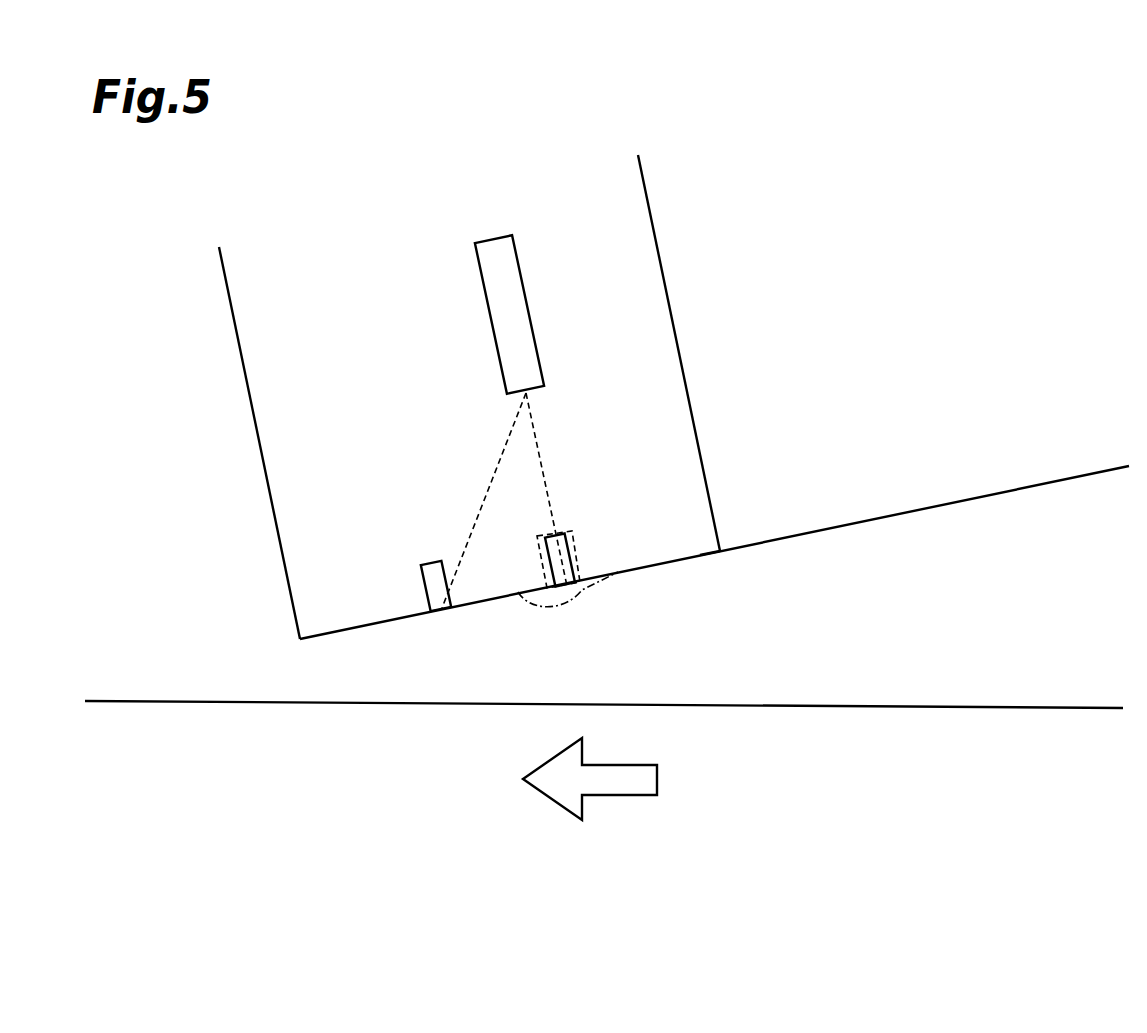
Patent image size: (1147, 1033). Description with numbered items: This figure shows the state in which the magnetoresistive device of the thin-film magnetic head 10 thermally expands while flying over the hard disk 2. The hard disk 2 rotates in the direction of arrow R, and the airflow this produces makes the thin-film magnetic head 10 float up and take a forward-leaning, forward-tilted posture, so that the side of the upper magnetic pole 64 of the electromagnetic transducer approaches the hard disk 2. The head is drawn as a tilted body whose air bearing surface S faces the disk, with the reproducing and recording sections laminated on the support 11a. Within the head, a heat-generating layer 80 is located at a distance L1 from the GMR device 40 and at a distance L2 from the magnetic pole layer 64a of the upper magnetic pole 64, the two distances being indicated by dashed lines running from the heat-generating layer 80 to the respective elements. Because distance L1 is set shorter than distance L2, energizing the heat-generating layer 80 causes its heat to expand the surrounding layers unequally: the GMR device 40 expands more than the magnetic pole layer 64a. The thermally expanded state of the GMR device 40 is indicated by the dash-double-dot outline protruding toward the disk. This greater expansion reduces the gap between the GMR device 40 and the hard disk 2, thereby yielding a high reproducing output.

The thin-film magnetic head 10 is at (241, 462).
The support 11a is at (909, 514).
The air bearing surface S is at (703, 556).
The hard disk 2 is at (898, 707).
The heat-generating layer 80 is at (525, 287).
The distance L1 is at (543, 466).
The distance L2 is at (490, 482).
The GMR device 40 is at (572, 544).
The magnetic pole layer 64a is at (423, 592).
The upper magnetic pole 64 is at (425, 622).
The arrow R is at (620, 797).